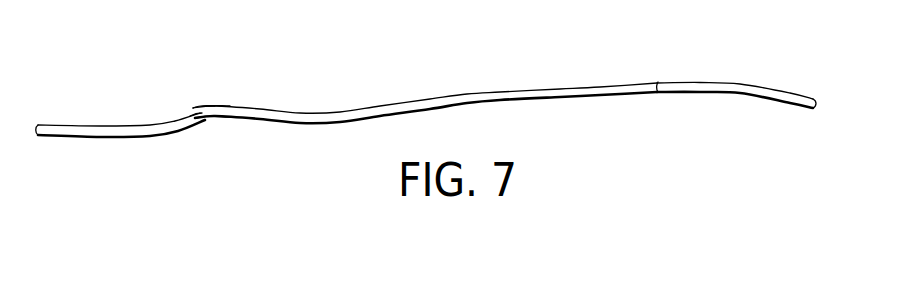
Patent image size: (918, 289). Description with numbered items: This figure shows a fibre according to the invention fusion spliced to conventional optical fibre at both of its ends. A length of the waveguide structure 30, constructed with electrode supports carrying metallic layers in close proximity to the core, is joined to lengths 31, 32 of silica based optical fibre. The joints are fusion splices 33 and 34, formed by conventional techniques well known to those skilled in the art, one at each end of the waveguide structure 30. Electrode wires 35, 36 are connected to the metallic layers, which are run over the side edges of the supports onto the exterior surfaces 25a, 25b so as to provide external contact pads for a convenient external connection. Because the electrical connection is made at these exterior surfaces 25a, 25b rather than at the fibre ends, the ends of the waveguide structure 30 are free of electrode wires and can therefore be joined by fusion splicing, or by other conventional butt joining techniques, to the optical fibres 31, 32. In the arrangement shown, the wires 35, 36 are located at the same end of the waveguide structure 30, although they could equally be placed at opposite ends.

The waveguide structure 30 is at (466, 94).
The silica based optical fibre 31 is at (67, 123).
The silica based optical fibre 32 is at (742, 83).
The fusion splice 33 is at (197, 127).
The fusion splice 34 is at (664, 95).
The electrode wire 35 is at (215, 107).
The electrode wire 36 is at (219, 124).
The exterior surface 25a is at (200, 108).
The exterior surface 25b is at (201, 122).